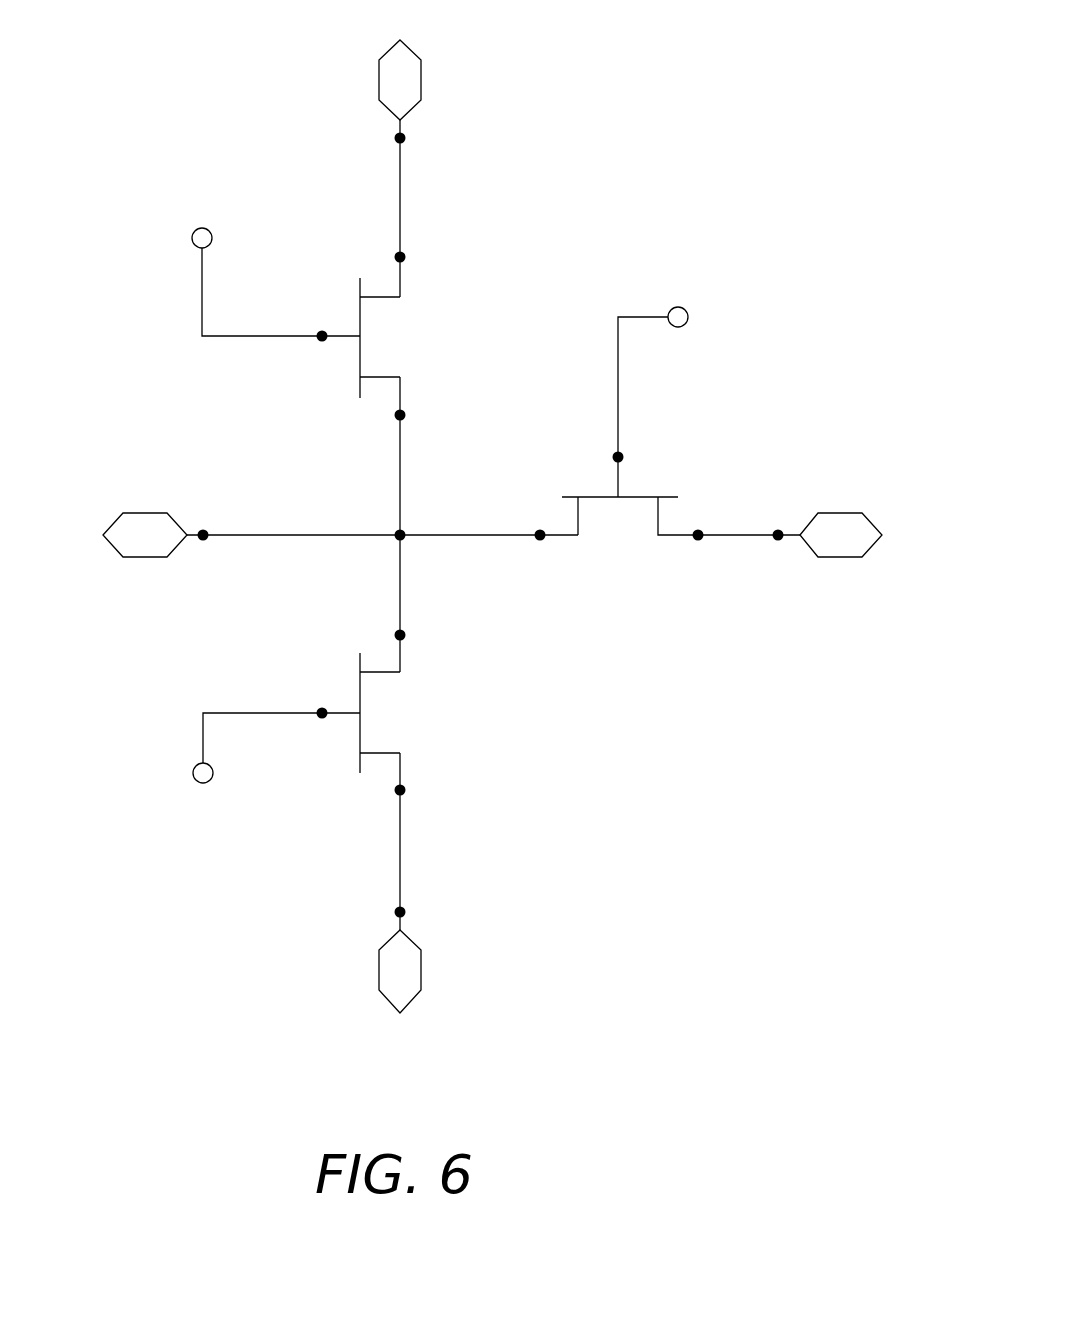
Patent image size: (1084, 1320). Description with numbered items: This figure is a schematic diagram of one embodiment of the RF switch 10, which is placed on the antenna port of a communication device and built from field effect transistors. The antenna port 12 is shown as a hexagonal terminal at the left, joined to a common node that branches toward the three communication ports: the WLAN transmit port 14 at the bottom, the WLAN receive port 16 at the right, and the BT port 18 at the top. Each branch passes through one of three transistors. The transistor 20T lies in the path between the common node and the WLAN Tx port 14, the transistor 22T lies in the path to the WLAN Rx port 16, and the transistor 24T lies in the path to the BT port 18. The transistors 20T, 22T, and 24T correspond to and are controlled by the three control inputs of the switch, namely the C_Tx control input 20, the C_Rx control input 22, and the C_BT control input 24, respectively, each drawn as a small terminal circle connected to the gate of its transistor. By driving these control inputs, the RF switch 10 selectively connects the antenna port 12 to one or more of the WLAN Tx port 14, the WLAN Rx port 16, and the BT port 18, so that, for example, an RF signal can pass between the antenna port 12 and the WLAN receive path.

The RF switch 10 is at (457, 477).
The antenna port 12 is at (143, 557).
The WLAN transmit (Tx) port 14 is at (415, 942).
The WLAN receive (Rx) port 16 is at (847, 512).
The BT port 18 is at (421, 60).
The control input 20 is at (203, 737).
The transistor 20T is at (360, 738).
The control input 22 is at (618, 397).
The transistor 22T is at (647, 495).
The control input 24 is at (202, 287).
The transistor 24T is at (360, 315).